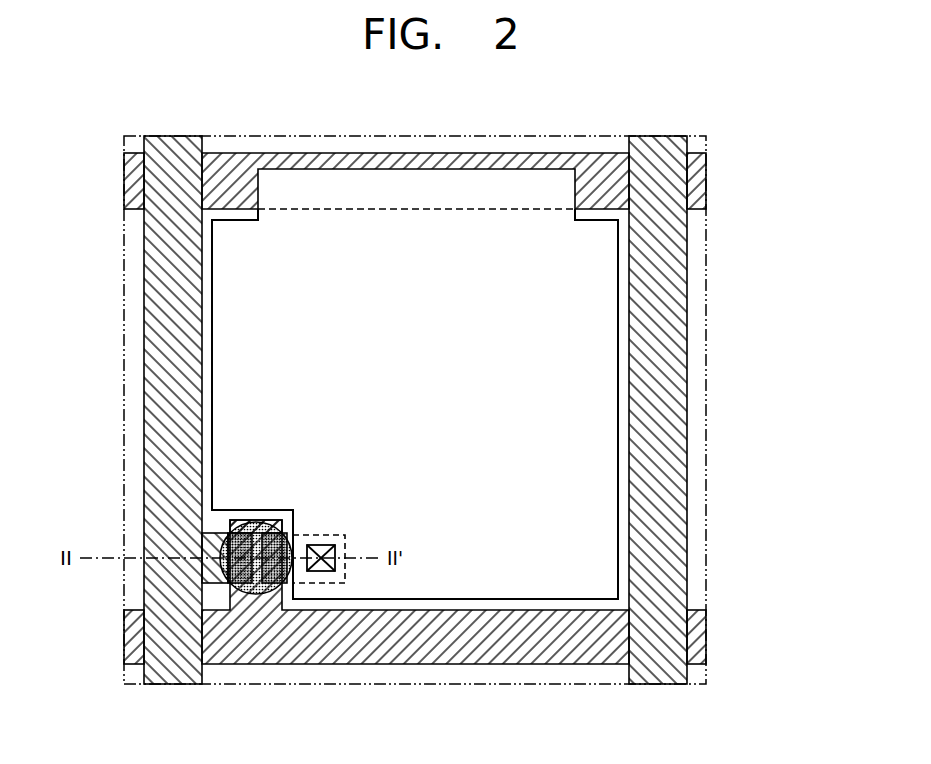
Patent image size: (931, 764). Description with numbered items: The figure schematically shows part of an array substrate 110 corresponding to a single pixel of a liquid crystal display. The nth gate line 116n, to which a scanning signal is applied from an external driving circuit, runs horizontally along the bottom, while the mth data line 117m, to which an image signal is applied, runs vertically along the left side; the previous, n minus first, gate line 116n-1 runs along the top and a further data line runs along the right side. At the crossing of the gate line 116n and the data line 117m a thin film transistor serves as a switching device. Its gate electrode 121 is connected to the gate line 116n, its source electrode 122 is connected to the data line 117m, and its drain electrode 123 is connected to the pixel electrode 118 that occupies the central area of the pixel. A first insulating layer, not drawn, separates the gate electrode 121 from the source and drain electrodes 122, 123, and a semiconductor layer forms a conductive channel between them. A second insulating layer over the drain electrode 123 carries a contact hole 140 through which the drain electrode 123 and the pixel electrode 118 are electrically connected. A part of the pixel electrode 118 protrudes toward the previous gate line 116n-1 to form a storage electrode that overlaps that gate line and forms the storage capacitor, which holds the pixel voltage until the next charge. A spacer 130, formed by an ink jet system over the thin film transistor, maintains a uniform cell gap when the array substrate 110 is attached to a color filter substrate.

The array substrate 110 is at (759, 120).
The n-1th gate line 116n-1 is at (703, 186).
The nth gate line 116n is at (700, 640).
The mth data line 117m is at (153, 443).
The pixel electrode 118 is at (607, 354).
The gate electrode 121 is at (270, 521).
The source electrode 122 is at (213, 582).
The drain electrode 123 is at (280, 584).
The spacer 130 is at (257, 586).
The contact hole 140 is at (320, 548).